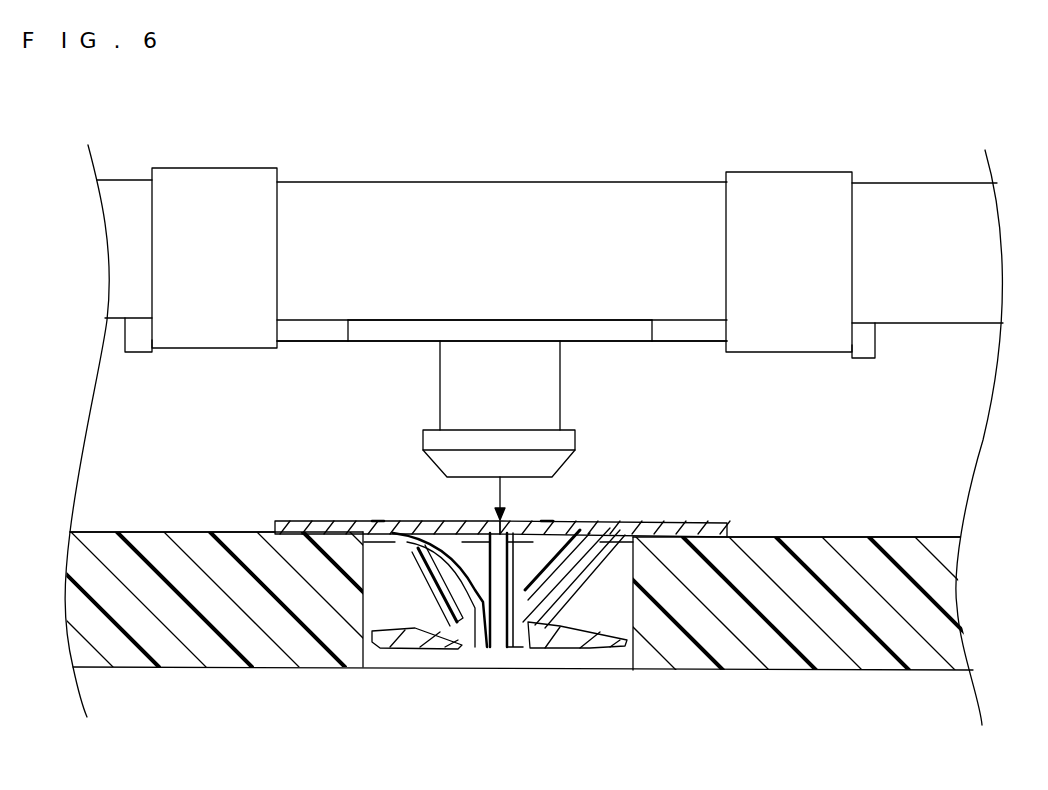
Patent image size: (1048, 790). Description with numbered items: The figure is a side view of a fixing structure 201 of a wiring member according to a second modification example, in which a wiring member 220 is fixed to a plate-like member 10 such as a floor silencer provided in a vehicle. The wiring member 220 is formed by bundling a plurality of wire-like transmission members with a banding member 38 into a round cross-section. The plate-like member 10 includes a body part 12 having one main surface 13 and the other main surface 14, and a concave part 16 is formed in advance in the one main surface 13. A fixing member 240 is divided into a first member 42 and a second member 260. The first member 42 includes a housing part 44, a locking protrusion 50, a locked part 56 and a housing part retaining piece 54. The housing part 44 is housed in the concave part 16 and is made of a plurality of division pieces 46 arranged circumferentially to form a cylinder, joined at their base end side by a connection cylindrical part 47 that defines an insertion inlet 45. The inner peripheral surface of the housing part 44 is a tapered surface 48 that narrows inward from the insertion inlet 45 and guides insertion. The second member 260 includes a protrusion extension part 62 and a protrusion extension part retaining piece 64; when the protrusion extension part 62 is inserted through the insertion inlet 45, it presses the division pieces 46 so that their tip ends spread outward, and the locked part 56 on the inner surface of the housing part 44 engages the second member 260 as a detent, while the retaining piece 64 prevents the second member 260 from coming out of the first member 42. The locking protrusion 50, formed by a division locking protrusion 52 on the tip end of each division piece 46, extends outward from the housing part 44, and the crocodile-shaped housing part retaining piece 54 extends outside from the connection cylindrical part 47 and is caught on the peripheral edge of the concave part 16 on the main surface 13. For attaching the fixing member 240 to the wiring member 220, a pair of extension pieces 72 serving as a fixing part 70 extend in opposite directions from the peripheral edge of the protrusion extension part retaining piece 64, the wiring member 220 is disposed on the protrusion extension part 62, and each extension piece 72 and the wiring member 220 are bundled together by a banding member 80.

The fixing structure of a wiring member 201 is at (922, 92).
The banding member 38 is at (628, 183).
The wiring member 220 is at (524, 176).
The banding member 80 is at (215, 182).
The fixing part 70 is at (502, 330).
The extension piece 72 is at (308, 341).
The protrusion extension part retaining piece 64 is at (600, 343).
The protrusion extension part 62 is at (452, 385).
The fixing member 240 is at (602, 483).
The second member 260 is at (572, 468).
The first member 42 is at (615, 512).
The housing part retaining piece 54 is at (295, 520).
The connection cylindrical part 47 is at (378, 519).
The tapered surface 48 is at (547, 521).
The insertion inlet 45 is at (462, 522).
The plate-like member 10 is at (524, 624).
The body part 12 is at (958, 612).
The one main surface 13 is at (940, 535).
The other main surface 14 is at (945, 672).
The concave part 16 is at (632, 652).
The housing part 44 is at (445, 590).
The division piece 46 is at (440, 582).
The locked part 56 is at (538, 584).
The locking protrusion 50 is at (499, 670).
The division locking protrusion 52 is at (415, 649).